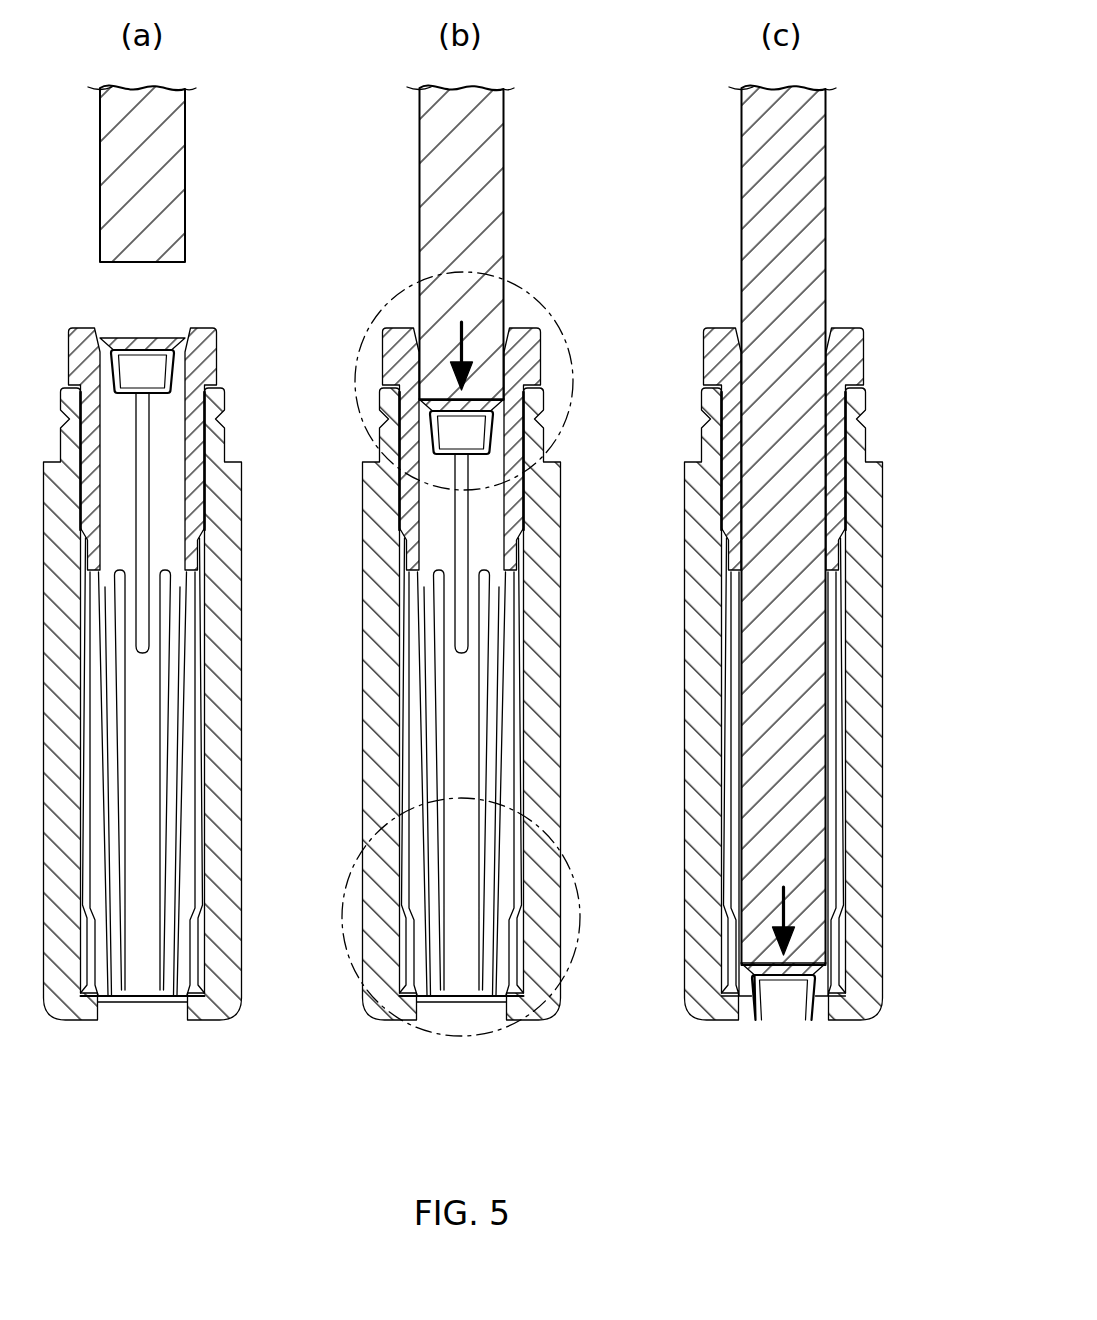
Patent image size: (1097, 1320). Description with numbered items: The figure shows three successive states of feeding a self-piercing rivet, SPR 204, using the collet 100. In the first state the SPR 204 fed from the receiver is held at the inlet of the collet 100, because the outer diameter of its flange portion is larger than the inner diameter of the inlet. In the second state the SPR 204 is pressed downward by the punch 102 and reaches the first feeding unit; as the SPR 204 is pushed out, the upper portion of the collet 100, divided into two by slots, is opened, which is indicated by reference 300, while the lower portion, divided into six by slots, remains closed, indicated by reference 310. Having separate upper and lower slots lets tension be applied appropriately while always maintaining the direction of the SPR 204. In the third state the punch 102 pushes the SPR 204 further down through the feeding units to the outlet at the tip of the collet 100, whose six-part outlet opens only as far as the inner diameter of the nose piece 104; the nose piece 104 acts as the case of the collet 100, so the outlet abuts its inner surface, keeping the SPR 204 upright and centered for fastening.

The collet 100 is at (162, 514).
The punch 102 is at (158, 167).
The nose piece 104 is at (225, 613).
The SPR (self-piercing rivet) 204 is at (137, 343).
The situation in which the upper portion divided into two is open 300 is at (546, 304).
The situation in which the lower portion divided into six is closed 310 is at (576, 880).